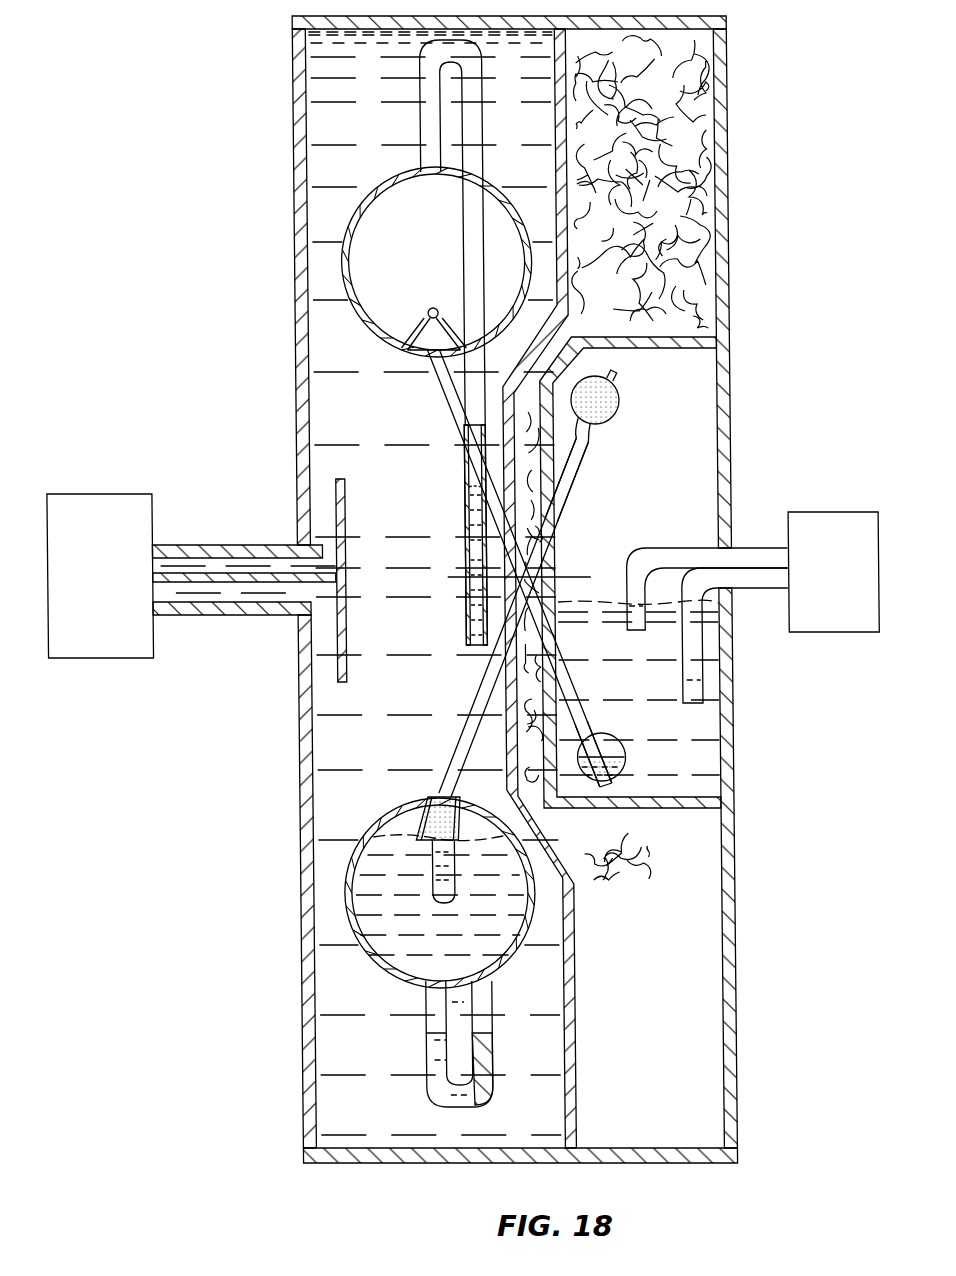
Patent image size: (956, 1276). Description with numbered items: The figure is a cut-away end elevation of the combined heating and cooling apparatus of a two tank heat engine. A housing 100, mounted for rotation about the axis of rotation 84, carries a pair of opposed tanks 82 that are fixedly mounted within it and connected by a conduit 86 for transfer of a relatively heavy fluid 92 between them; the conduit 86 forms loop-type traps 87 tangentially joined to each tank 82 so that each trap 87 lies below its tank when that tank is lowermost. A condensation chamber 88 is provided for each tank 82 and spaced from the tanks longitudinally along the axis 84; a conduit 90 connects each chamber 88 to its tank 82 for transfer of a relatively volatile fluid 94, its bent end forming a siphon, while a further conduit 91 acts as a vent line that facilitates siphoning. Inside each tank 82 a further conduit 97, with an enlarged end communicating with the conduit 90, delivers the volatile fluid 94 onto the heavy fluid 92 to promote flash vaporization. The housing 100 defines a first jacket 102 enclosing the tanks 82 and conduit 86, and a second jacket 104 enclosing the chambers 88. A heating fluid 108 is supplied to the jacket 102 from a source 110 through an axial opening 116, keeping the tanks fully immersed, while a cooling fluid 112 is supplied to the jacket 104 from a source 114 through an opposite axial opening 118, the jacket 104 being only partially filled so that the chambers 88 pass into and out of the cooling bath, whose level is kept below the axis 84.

The tank 82 is at (392, 178).
The axis of rotation 84 is at (584, 576).
The conduit 86 is at (462, 530).
The loop-type trap 87 is at (478, 44).
The condensation chamber 88 is at (616, 406).
The conduit 90 is at (578, 474).
The further conduit 91 is at (456, 730).
The relatively heavy fluid 92 is at (456, 937).
The relatively volatile fluid 94 is at (428, 806).
The further conduit 97 is at (424, 310).
The housing 100 is at (512, 589).
The first jacket 102 is at (556, 1132).
The second jacket 104 is at (698, 346).
The heating fluid 108 is at (312, 1080).
The source 110 is at (136, 494).
The cooling fluid 112 is at (684, 734).
The source 114 is at (822, 512).
The axial opening 116 is at (325, 604).
The axial opening 118 is at (722, 548).